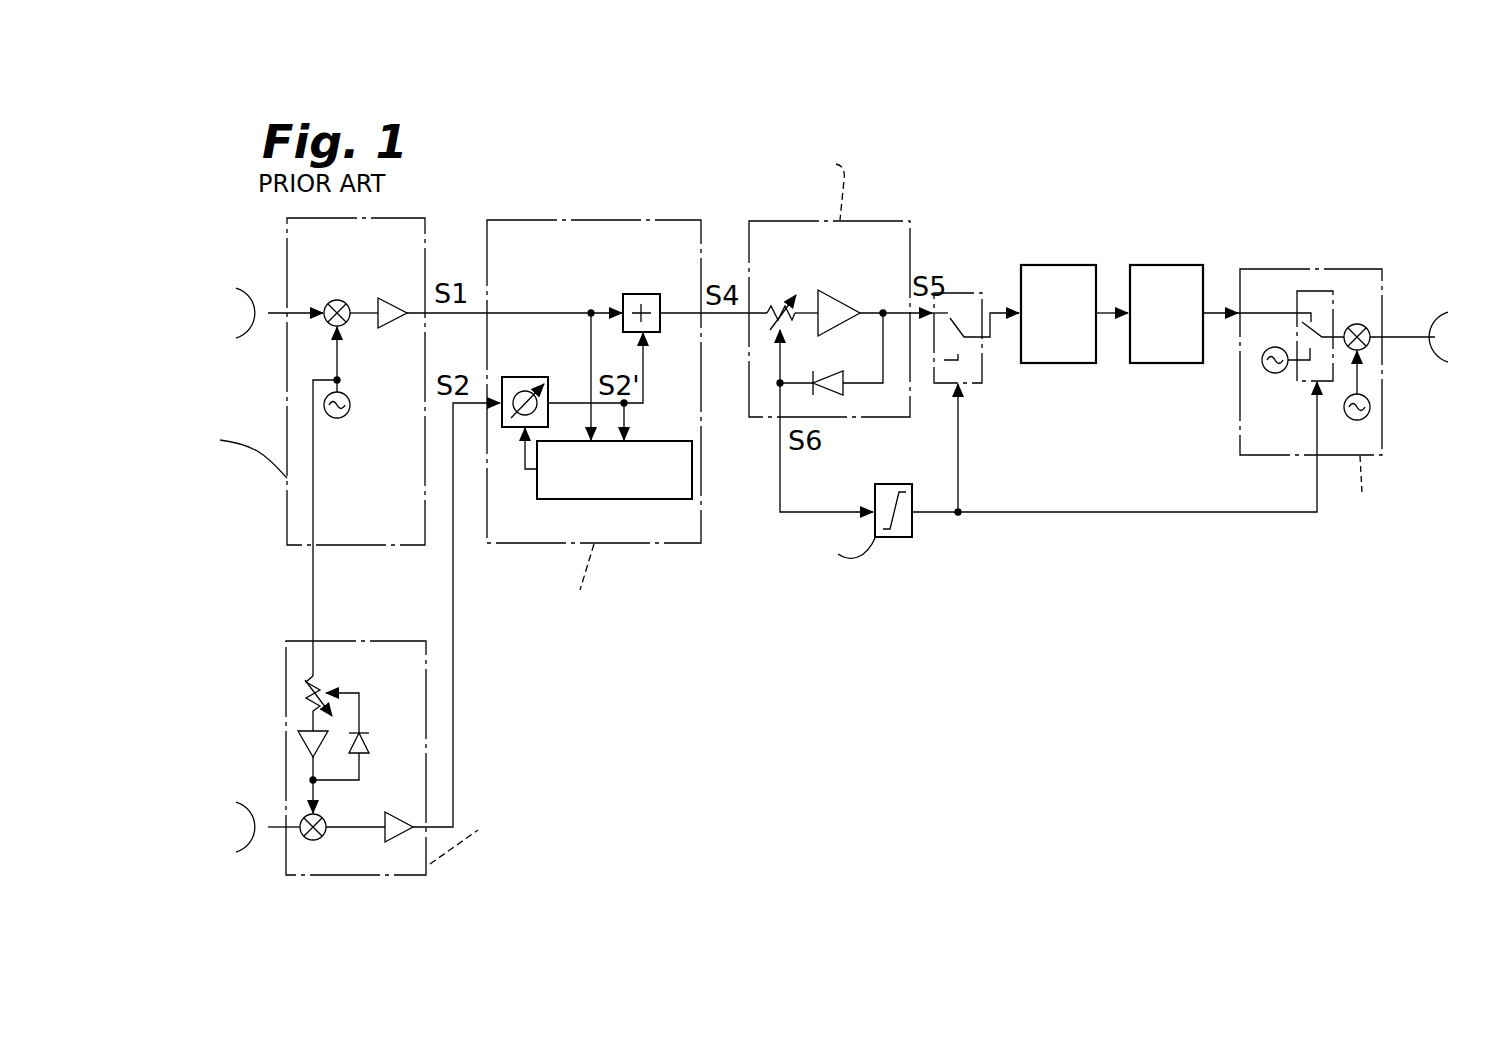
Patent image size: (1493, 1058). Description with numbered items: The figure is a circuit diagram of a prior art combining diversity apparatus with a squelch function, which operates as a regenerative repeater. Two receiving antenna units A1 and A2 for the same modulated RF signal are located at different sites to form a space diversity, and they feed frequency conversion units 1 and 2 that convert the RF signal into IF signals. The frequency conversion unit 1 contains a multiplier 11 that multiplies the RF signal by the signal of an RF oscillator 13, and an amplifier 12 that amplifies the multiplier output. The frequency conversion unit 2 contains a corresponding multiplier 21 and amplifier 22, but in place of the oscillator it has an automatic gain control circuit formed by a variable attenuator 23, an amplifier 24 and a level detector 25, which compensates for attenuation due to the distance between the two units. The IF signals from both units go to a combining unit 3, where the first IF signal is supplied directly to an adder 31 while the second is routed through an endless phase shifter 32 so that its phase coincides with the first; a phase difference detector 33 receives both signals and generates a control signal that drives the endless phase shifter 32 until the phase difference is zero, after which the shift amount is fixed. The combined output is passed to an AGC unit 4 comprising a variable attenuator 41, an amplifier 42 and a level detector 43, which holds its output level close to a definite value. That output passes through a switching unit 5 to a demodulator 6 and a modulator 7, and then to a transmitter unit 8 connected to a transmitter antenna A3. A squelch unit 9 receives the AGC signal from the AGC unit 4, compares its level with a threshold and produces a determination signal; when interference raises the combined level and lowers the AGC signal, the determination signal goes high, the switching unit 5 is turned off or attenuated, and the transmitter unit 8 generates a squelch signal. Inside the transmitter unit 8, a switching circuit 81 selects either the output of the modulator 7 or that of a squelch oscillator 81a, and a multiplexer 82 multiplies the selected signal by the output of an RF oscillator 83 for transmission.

The frequency conversion unit 1 is at (414, 220).
The frequency conversion unit 2 is at (392, 642).
The combining unit 3 is at (676, 220).
The AGC unit 4 is at (890, 221).
The switching unit 5 is at (966, 292).
The demodulator 6 is at (1066, 265).
The modulator 7 is at (1172, 265).
The transmitter unit 8 is at (1342, 269).
The squelch unit 9 is at (894, 537).
The multiplier 11 is at (340, 299).
The amplifier 12 is at (392, 297).
The RF oscillator 13 is at (350, 394).
The multiplier 21 is at (317, 841).
The amplifier 22 is at (404, 842).
The variable attenuator 23 is at (322, 682).
The amplifier 24 is at (326, 752).
The level detector 25 is at (366, 746).
The adder 31 is at (648, 293).
The endless phase shifter 32 is at (522, 376).
The phase difference detector 33 is at (623, 500).
The variable attenuator 41 is at (780, 298).
The amplifier 42 is at (840, 300).
The level detector 43 is at (834, 371).
The switching circuit 81 is at (1296, 290).
The squelch oscillator 81a is at (1266, 348).
The multiplexer 82 is at (1355, 325).
The RF oscillator 83 is at (1345, 416).
The receiving antenna unit A1 is at (250, 286).
The receiving antenna unit A2 is at (250, 800).
The transmitter antenna A3 is at (1440, 364).